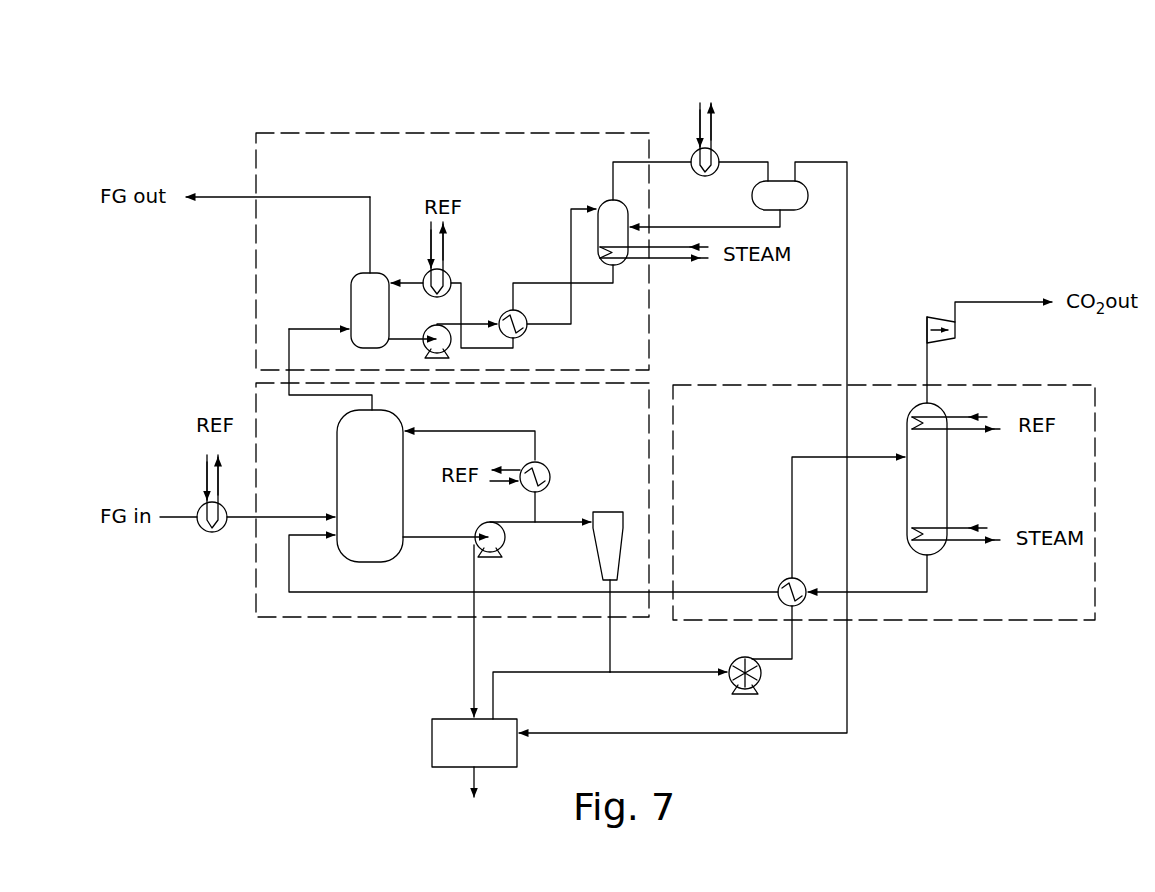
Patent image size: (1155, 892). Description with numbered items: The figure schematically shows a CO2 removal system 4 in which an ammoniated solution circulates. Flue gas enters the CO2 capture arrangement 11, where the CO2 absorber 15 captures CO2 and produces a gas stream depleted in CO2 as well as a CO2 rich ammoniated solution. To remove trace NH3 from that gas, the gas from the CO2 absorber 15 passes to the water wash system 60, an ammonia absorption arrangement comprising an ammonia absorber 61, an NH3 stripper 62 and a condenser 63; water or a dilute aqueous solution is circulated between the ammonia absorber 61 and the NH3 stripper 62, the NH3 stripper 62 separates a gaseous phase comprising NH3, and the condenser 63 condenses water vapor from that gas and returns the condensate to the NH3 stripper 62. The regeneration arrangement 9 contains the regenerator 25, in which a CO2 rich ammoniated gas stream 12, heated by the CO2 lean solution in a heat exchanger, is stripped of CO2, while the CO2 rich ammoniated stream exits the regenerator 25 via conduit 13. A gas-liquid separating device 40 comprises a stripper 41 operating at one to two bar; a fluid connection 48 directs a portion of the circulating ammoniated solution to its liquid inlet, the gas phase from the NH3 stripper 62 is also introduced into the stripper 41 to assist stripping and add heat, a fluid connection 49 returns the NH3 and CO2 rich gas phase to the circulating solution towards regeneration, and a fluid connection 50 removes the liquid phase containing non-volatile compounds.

The CO2 removal system 4 is at (303, 116).
The water wash system 60 is at (475, 134).
The ammonia absorber 61 is at (355, 276).
The NH3 stripper 62 is at (598, 205).
The condenser 63 is at (780, 181).
The CO2 capture arrangement 11 is at (256, 572).
The CO2 absorber 15 is at (400, 418).
The conduit 13 is at (565, 592).
The CO2 rich ammoniated gas stream 12 is at (610, 645).
The fluid connection 48 is at (474, 688).
The fluid connection 49 is at (494, 698).
The regeneration arrangement 9 is at (1095, 480).
The regenerator 25 is at (947, 478).
The gas-liquid separating device 40 is at (412, 748).
The stripper 41 is at (440, 738).
The fluid connection 50 is at (474, 780).